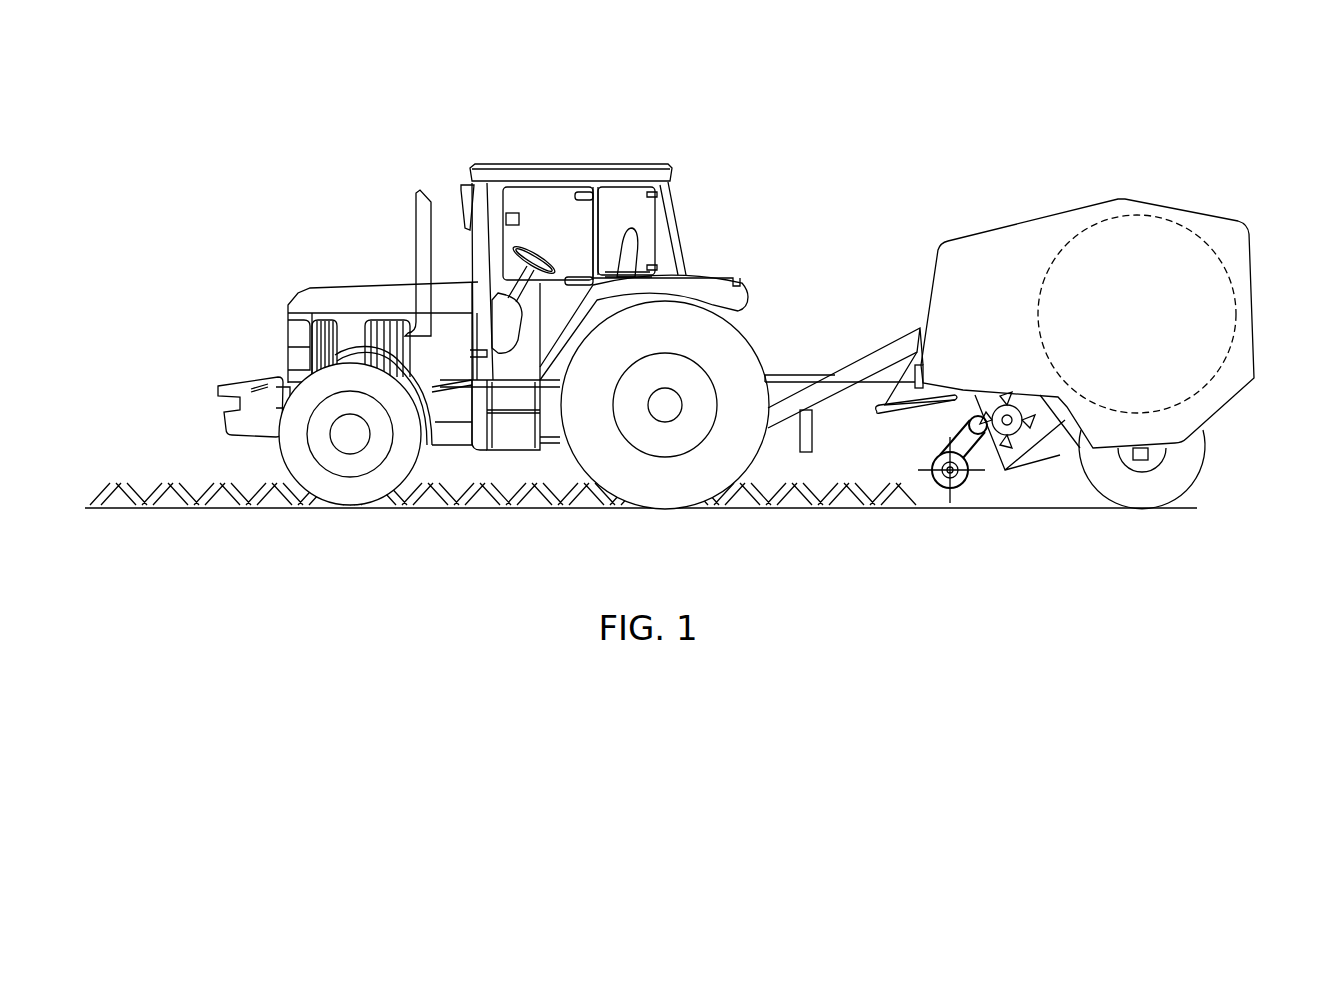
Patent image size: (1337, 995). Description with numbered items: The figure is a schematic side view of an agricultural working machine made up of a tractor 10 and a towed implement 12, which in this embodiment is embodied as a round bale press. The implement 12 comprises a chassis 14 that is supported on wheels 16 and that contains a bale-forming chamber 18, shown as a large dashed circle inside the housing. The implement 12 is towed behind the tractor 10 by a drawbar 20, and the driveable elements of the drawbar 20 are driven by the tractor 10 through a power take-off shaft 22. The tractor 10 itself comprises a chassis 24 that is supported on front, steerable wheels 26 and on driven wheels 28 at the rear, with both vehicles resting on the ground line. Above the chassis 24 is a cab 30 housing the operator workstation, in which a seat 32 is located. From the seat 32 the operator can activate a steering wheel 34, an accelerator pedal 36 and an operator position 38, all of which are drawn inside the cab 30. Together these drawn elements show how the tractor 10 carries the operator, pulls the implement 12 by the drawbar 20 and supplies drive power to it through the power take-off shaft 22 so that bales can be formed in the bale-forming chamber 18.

The tractor 10 is at (500, 150).
The implement 12 is at (1020, 186).
The chassis 14 is at (1213, 395).
The wheels 16 is at (1151, 490).
The bale-forming chamber 18 is at (1165, 249).
The drawbar 20 is at (873, 363).
The power take-off shaft 22 is at (785, 375).
The chassis 24 is at (455, 403).
The front, steerable wheels 26 is at (350, 490).
The driven wheels 28 is at (668, 490).
The cab 30 is at (662, 164).
The seat 32 is at (628, 240).
The steering wheel 34 is at (533, 252).
The accelerator pedal 36 is at (503, 358).
The operator position 38 is at (506, 219).